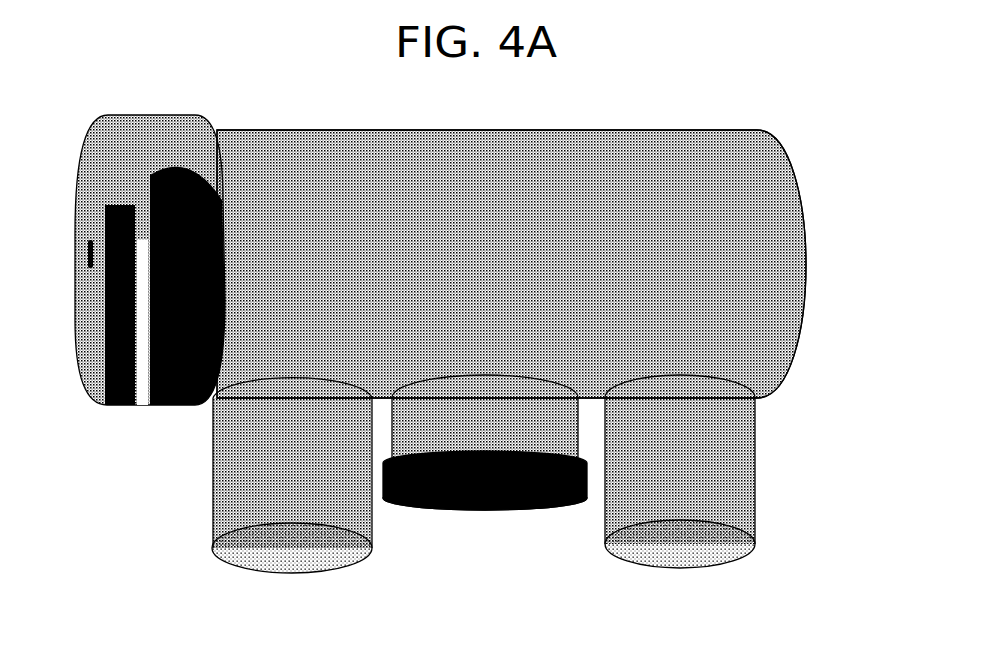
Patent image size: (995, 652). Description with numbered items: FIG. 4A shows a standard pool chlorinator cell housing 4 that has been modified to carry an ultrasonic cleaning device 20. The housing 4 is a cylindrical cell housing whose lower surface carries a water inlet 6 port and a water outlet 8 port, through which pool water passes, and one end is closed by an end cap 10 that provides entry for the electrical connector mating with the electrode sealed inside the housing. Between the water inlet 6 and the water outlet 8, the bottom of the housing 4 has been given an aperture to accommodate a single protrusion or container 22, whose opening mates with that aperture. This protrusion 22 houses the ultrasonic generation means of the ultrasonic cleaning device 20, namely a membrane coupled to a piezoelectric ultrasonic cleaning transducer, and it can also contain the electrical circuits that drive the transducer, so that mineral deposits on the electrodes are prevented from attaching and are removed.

The housing 4 is at (665, 158).
The water inlet 6 is at (232, 508).
The water outlet 8 is at (745, 482).
The end cap 10 is at (122, 406).
The ultrasonic cleaning device 20 is at (549, 551).
The protrusion or container 22 is at (412, 505).